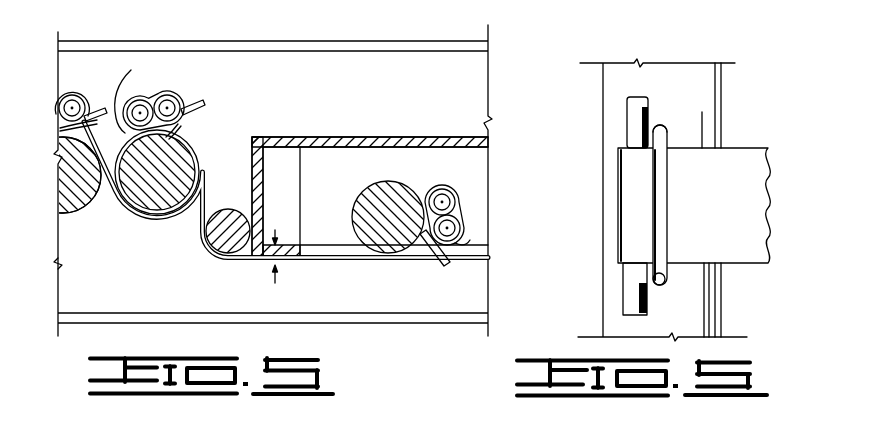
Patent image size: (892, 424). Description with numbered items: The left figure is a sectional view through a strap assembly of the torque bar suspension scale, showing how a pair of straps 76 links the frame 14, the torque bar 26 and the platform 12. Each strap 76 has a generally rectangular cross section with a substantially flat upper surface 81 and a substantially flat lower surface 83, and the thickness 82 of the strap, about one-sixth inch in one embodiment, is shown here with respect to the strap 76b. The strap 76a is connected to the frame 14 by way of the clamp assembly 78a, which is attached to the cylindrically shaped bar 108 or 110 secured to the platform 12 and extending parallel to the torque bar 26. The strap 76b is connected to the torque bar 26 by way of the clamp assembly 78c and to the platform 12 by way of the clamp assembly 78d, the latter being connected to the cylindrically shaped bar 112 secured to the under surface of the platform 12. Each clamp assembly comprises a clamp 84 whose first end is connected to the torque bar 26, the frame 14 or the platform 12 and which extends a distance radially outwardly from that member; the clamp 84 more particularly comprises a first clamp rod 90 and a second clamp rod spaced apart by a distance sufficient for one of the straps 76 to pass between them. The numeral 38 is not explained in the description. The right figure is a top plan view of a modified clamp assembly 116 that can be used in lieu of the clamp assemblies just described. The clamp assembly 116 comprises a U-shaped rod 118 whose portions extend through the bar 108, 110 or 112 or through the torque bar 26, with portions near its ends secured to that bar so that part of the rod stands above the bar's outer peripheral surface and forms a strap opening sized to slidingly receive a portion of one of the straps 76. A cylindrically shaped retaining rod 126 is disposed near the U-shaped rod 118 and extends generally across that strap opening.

In FIG. 5, the platform 12 is at (367, 137).
In FIG. 5, the frame 14 is at (70, 188).
In FIG. 5, the first torque bar 26 is at (145, 217).
In FIG. 5, the roller holder wire (38 or 40) 38 is at (131, 70).
In FIG. 6, the strap 76 is at (753, 217).
In FIG. 5, the strap 76a is at (112, 192).
In FIG. 5, the strap 76b is at (234, 262).
In FIG. 5, the clamp assembly 78a is at (97, 80).
In FIG. 5, the clamp assembly 78c is at (195, 90).
In FIG. 5, the clamp assembly 78d is at (480, 229).
In FIG. 5, the upper surface 81 is at (206, 190).
In FIG. 5, the thickness 82 is at (278, 283).
In FIG. 5, the lower surface 83 is at (262, 258).
In FIG. 5, the clamp 84 is at (77, 84).
In FIG. 5, the first clamp rod 90 is at (62, 130).
In FIG. 5, the cylindrically shaped bar 108 is at (72, 198).
In FIG. 6, the cylindrically shaped bar 110 is at (612, 80).
In FIG. 5, the cylindrically shaped bar 112 is at (390, 190).
In FIG. 6, the modified clamp assembly 116 is at (660, 114).
In FIG. 6, the U-shaped rod 118 is at (666, 197).
In FIG. 6, the retaining rod 126 is at (630, 118).